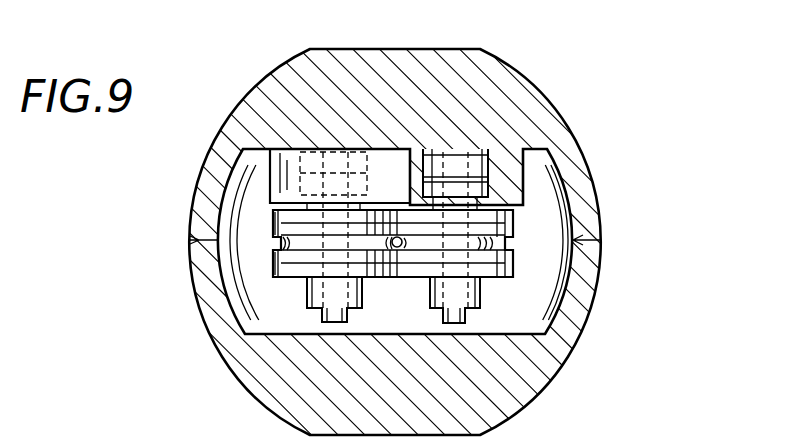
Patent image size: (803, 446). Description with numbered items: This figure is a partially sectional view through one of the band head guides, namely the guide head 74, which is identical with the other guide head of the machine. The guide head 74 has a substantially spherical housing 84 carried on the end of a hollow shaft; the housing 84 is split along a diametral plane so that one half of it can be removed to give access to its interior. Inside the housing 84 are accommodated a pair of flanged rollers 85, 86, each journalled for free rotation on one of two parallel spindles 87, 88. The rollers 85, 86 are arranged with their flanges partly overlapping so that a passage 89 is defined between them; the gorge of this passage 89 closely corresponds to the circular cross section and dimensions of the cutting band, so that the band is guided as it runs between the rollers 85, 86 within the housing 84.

The guide head 74 is at (612, 224).
The spherical housing 84 is at (518, 107).
The flanged roller 85 is at (276, 219).
The flanged roller 86 is at (514, 270).
The spindle 87 is at (320, 317).
The spindle 88 is at (465, 318).
The passage 89 is at (404, 250).